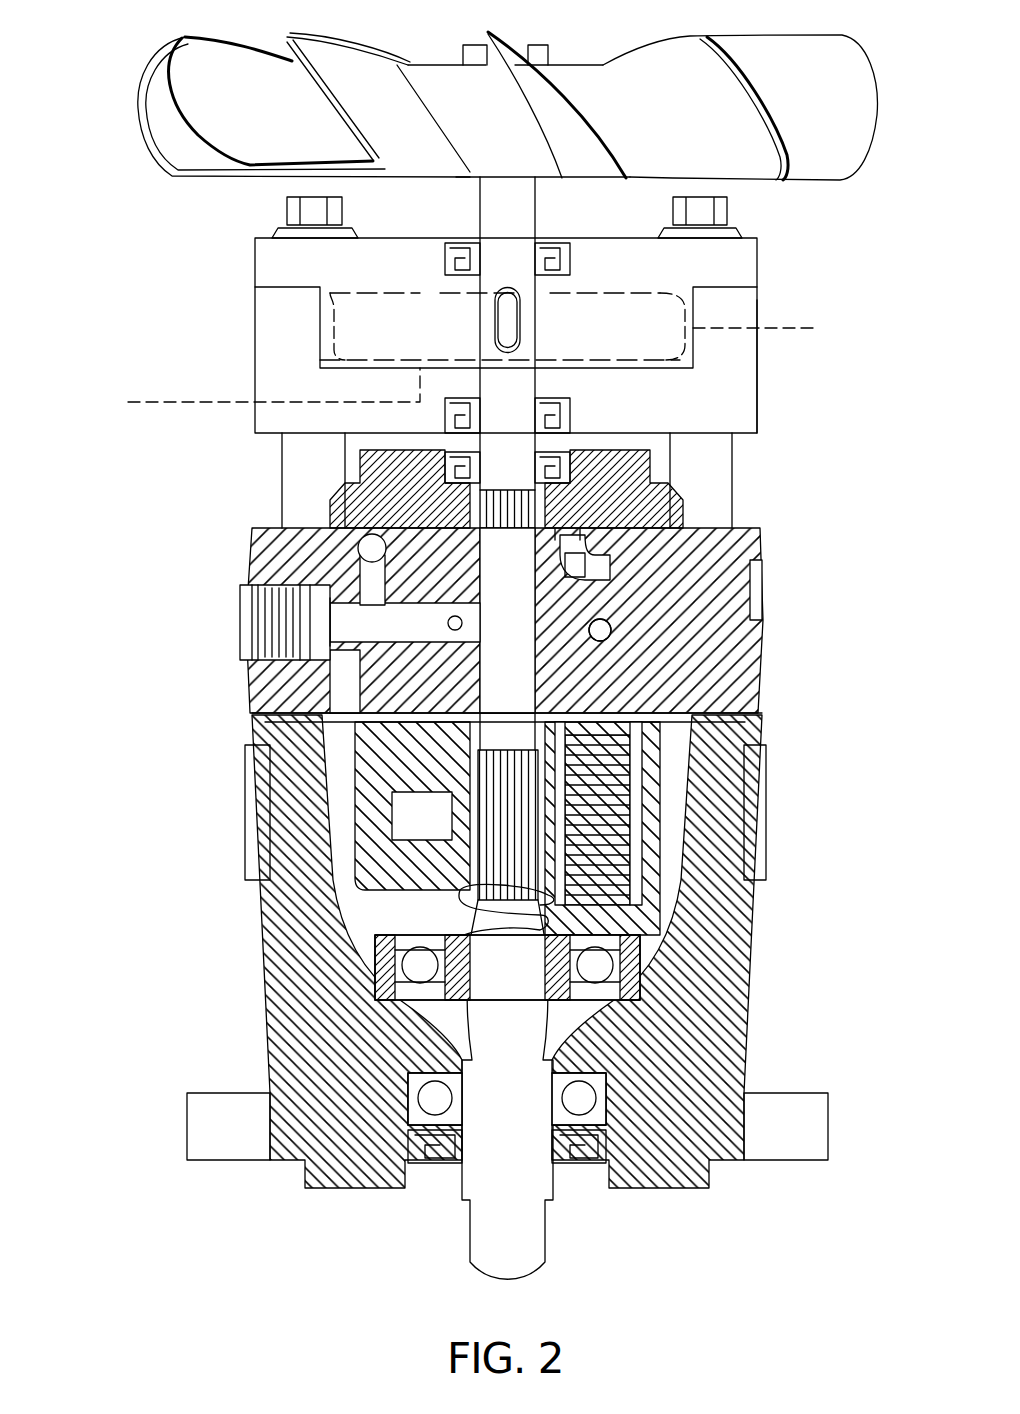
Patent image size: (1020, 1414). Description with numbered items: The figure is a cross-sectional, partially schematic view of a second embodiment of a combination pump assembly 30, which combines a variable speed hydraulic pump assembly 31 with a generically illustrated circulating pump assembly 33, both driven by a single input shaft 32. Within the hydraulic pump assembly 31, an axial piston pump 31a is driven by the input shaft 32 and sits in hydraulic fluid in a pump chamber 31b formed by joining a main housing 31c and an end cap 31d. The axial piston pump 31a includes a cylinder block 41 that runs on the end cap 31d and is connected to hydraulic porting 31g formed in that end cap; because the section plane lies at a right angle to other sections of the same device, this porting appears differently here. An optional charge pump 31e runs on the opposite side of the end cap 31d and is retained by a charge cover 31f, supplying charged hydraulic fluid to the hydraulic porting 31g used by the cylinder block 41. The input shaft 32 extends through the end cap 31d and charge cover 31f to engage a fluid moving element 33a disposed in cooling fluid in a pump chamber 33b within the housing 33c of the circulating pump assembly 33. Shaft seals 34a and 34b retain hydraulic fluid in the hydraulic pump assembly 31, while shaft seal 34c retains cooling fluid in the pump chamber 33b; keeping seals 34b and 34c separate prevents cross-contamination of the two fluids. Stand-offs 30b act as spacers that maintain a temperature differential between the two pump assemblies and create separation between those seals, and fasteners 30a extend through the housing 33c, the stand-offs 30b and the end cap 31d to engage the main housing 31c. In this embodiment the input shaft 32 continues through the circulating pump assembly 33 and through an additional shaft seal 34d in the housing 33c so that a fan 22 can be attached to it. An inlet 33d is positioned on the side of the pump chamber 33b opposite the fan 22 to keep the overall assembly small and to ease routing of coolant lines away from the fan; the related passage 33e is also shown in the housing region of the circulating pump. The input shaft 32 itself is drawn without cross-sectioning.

The fan 22 is at (843, 117).
The combination pump assembly 30 is at (450, 359).
The fasteners 30a is at (287, 210).
The stand-offs 30b is at (282, 500).
The variable speed hydraulic pump assembly 31 is at (498, 835).
The axial piston pump 31a is at (362, 904).
The pump chamber 31b is at (680, 825).
The main housing 31c is at (705, 940).
The end cap 31d is at (750, 650).
The charge pump 31e is at (318, 466).
The charge cover 31f is at (660, 482).
The hydraulic porting 31g is at (598, 578).
The input shaft 32 is at (545, 1252).
The circulating pump assembly 33 is at (487, 327).
The fluid moving element 33a is at (428, 290).
The pump chamber 33b is at (640, 292).
The housing 33c is at (757, 300).
The inlet 33d is at (145, 402).
The passage 33e is at (805, 328).
The shaft seal 34a is at (576, 1150).
The shaft seal 34b is at (555, 470).
The shaft seal 34c is at (552, 422).
The additional shaft seal 34d is at (552, 256).
The cylinder block 41 is at (432, 822).